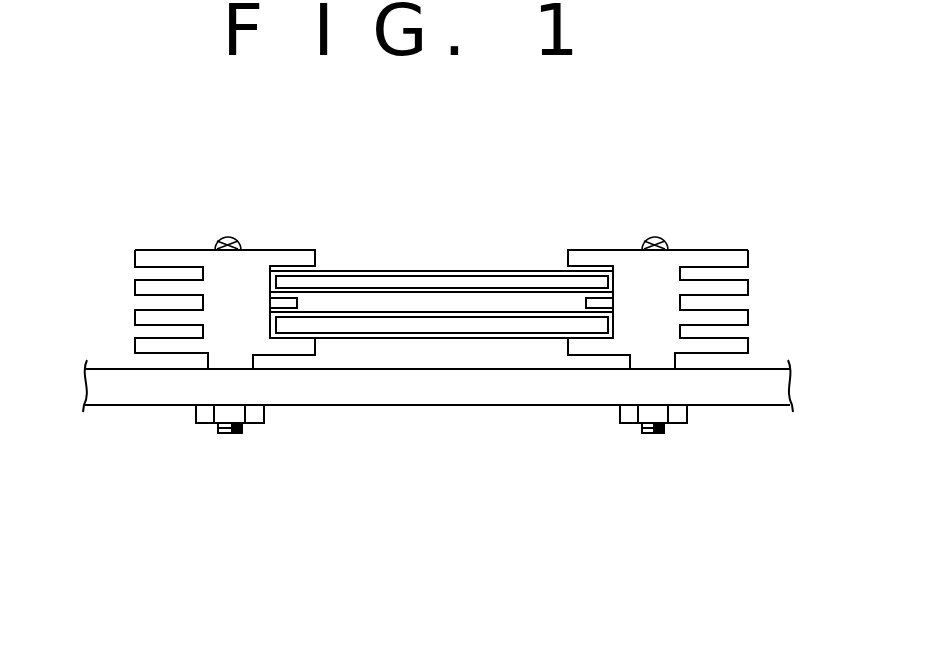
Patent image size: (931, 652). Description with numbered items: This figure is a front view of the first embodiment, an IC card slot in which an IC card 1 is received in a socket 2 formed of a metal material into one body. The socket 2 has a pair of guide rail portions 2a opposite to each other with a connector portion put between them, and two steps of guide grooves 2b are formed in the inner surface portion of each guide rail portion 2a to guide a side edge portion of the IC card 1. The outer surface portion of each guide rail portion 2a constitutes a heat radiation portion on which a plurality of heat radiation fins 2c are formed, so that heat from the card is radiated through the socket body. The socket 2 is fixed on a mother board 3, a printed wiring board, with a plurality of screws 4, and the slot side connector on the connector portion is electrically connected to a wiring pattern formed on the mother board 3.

The IC card 1 is at (383, 272).
The socket 2 is at (442, 271).
The guide rail portion 2a is at (206, 272).
The guide groove 2b is at (288, 281).
The heat radiation fin 2c is at (140, 250).
The mother board 3 is at (413, 403).
The screw 4 is at (228, 240).